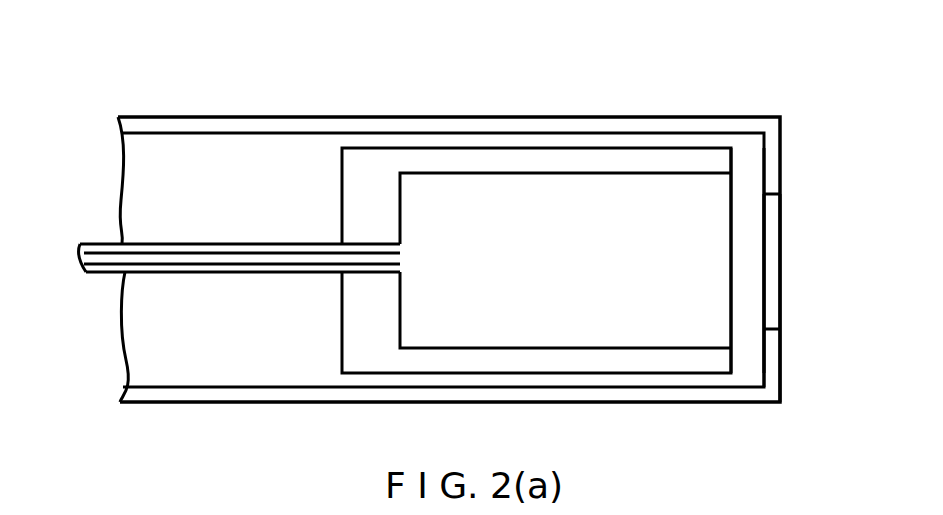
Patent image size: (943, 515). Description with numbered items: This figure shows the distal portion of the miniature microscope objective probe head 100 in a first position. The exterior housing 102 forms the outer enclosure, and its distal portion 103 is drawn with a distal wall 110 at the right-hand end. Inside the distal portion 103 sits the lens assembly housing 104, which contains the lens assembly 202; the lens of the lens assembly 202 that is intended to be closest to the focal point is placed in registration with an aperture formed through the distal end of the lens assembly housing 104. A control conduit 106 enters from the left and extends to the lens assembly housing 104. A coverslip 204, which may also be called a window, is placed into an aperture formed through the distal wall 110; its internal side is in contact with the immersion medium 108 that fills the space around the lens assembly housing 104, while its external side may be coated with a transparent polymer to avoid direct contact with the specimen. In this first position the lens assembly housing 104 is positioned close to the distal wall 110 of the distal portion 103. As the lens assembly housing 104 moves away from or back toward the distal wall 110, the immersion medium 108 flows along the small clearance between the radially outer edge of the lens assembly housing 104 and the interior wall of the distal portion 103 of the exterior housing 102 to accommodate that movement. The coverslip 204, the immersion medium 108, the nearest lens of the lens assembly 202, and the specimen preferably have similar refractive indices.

The miniature microscope objective probe head 100 is at (777, 94).
The exterior housing 102 is at (211, 117).
The distal portion 103 is at (612, 117).
The lens assembly housing 104 is at (488, 145).
The control conduit 106 is at (373, 263).
The immersion medium 108 is at (748, 173).
The distal wall 110 is at (771, 359).
The lens assembly 202 is at (698, 237).
The coverslip 204 is at (770, 281).